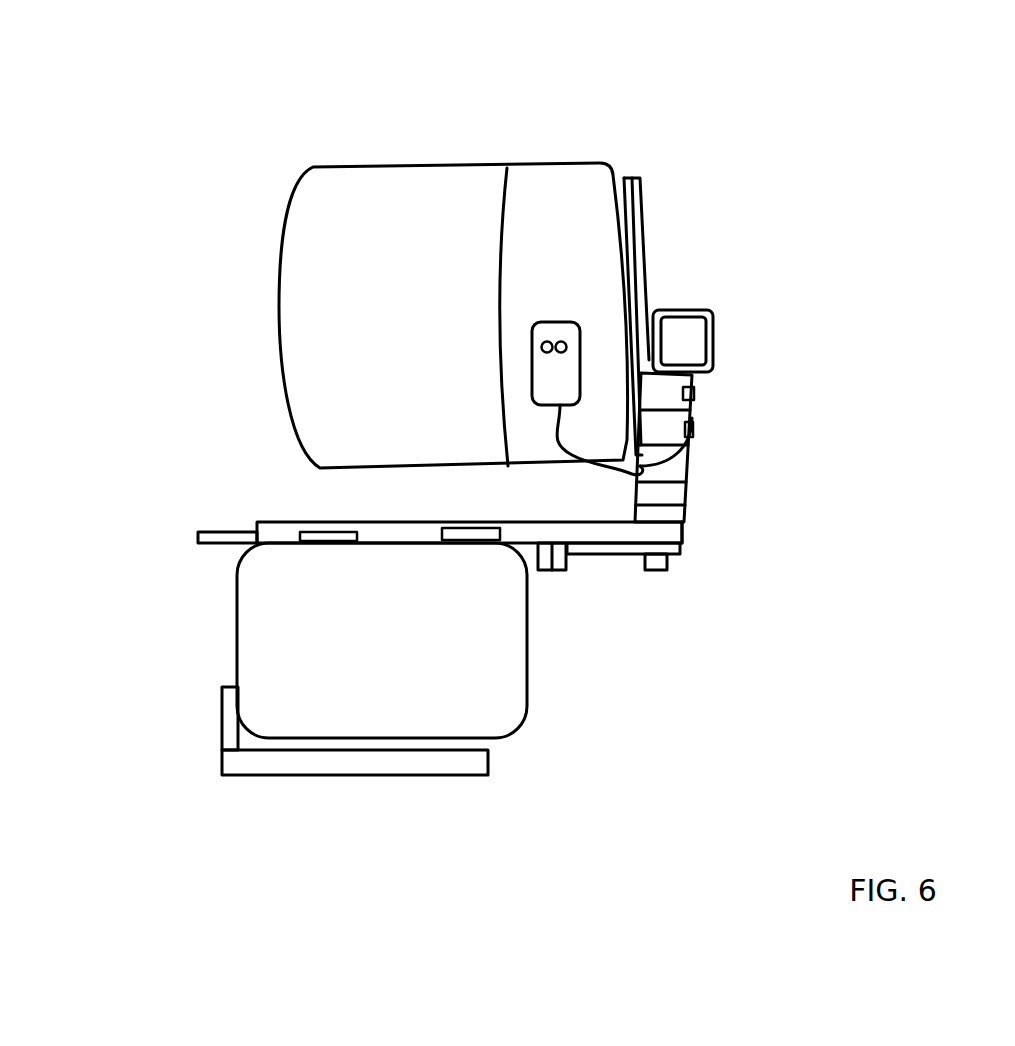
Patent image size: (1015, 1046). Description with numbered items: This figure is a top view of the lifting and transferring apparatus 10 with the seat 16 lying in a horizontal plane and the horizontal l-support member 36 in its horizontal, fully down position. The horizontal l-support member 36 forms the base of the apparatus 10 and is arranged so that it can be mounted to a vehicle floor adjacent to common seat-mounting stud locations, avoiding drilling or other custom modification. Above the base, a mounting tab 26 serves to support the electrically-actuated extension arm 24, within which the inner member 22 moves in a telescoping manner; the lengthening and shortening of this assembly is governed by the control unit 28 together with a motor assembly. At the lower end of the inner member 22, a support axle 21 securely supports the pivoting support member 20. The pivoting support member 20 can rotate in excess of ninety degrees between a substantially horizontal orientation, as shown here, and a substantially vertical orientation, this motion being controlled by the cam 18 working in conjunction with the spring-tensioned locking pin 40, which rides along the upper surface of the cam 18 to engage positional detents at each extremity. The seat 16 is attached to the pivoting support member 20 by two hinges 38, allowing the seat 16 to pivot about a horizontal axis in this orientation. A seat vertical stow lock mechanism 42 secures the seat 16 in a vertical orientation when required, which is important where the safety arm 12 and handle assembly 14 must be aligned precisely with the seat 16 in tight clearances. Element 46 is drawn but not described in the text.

The lifting and transferring apparatus 10 is at (900, 213).
The safety arm 12 is at (283, 763).
The handle assembly 14 is at (225, 727).
The seat 16 is at (273, 610).
The cam 18 is at (620, 553).
The pivoting support member 20 is at (683, 540).
The support axle 21 is at (657, 569).
The inner member 22 is at (684, 333).
The electrically-actuated extension arm 24 is at (672, 470).
The mounting tab 26 is at (690, 435).
The control unit 28 is at (550, 375).
The horizontal l-support member 36 is at (638, 227).
The hinges 38 is at (427, 521).
The locking pin 40 is at (533, 563).
The seat vertical stow lock mechanism 42 is at (213, 528).
The backrest 46 is at (622, 200).